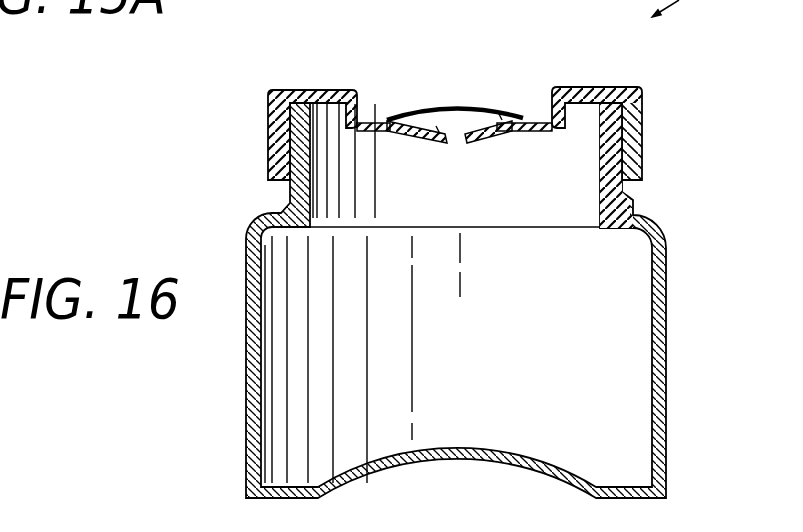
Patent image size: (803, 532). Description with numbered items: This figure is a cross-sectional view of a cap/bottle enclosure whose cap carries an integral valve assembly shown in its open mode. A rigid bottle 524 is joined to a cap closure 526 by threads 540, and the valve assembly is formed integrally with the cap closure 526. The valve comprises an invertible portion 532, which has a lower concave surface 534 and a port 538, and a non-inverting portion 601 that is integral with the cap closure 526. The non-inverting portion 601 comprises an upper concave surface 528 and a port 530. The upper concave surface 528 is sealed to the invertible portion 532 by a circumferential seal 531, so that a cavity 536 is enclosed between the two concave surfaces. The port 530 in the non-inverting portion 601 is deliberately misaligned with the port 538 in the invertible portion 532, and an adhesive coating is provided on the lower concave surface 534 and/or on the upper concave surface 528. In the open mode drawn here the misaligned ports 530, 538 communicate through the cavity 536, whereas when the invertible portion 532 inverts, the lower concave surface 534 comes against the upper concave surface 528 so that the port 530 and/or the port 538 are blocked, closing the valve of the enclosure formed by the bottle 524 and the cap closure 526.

The rigid bottle 524 is at (667, 233).
The cap closure 526 is at (648, 162).
The upper concave surface 528 is at (472, 138).
The port 530 is at (456, 147).
The circumferential seal 531 is at (518, 131).
The invertible portion 532 is at (437, 104).
The lower concave surface 534 is at (414, 114).
The cavity 536 is at (437, 127).
The port 538 is at (497, 111).
The threads 540 is at (642, 130).
The non-inverting portion 601 is at (489, 144).